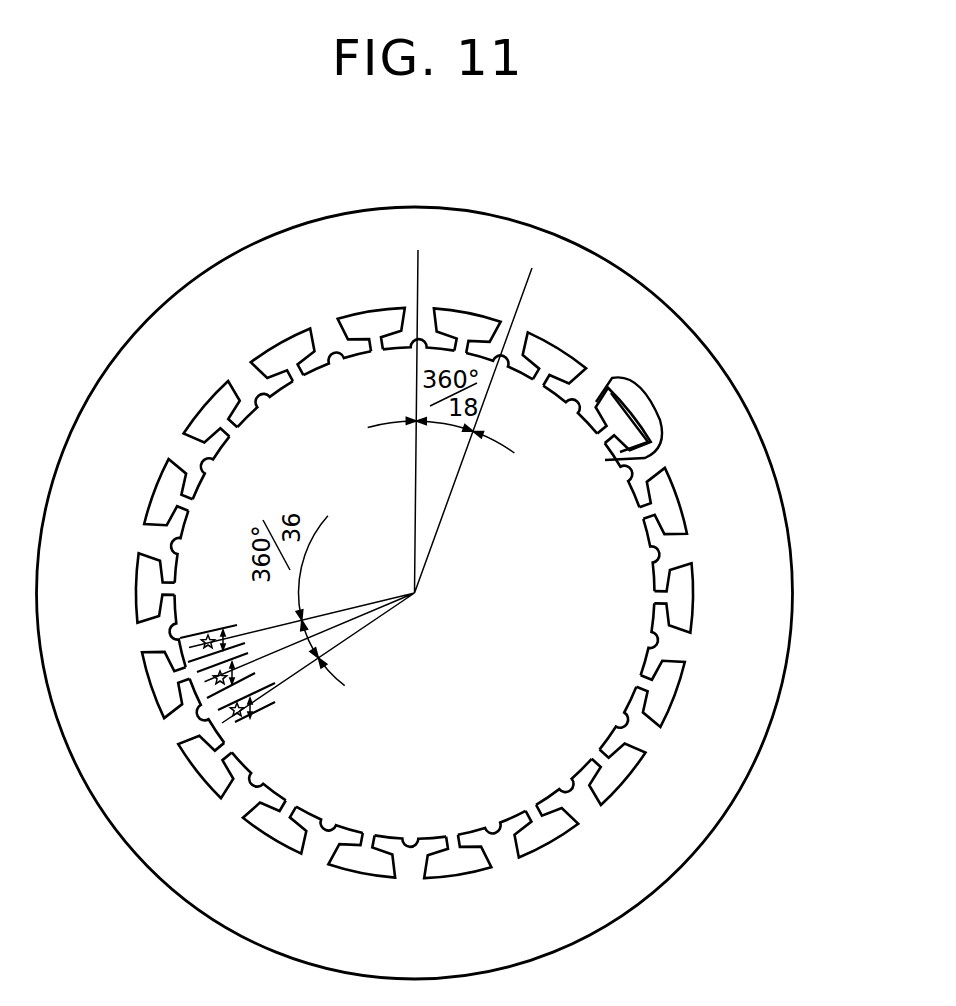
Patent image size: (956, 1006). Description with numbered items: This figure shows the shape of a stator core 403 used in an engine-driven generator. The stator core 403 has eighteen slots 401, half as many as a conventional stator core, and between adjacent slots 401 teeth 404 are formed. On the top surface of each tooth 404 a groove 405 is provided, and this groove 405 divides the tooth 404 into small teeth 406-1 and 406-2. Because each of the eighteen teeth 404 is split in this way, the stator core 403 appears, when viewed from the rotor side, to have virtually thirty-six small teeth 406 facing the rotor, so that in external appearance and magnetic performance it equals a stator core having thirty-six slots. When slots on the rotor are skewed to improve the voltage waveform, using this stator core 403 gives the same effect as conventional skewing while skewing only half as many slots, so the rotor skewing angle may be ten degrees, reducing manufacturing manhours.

The slot 401 is at (670, 607).
The stator core 403 is at (730, 388).
The tooth 404 is at (627, 730).
The groove 405 is at (657, 640).
The small tooth 406 is at (640, 553).
The small tooth 406-1 is at (618, 457).
The small tooth 406-2 is at (572, 420).